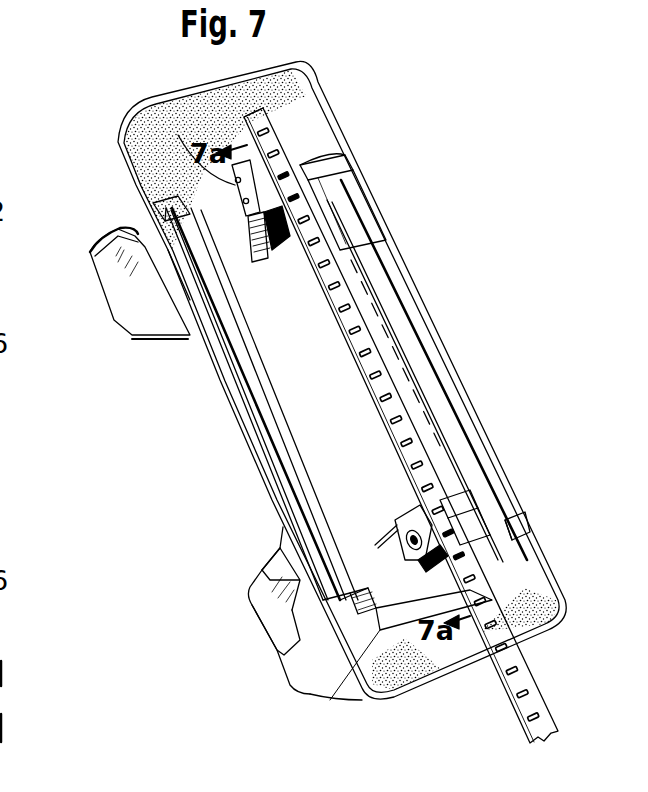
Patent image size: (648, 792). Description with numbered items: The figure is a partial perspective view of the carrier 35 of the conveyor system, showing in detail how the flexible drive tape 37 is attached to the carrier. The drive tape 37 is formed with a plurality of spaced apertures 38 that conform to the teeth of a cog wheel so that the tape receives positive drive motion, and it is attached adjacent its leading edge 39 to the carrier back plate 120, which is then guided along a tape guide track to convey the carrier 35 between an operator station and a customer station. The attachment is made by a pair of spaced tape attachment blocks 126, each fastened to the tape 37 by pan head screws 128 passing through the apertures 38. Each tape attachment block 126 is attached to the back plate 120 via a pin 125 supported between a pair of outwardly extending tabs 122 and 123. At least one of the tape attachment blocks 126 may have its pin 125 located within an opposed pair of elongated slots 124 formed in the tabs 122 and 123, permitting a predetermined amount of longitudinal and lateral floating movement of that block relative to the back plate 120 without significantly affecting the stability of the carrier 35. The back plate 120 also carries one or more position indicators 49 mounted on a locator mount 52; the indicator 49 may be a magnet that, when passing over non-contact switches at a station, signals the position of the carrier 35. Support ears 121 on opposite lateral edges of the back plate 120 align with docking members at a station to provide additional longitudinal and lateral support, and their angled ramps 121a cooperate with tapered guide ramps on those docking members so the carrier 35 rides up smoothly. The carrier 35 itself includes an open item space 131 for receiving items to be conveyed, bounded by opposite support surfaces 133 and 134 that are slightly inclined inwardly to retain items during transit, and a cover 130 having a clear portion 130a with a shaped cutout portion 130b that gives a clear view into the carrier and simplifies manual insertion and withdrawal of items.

The carrier 35 is at (74, 158).
The flexible drive tape 37 is at (530, 708).
The spaced apertures 38 is at (522, 682).
The leading edge 39 is at (252, 117).
The position indicator 49 is at (178, 135).
The locator mount 52 is at (244, 256).
The carrier back plate 120 is at (285, 378).
The support ears 121 is at (276, 421).
The angled ramps 121a is at (150, 183).
The outwardly extending tab 122 is at (322, 190).
The outwardly extending tab 123 is at (372, 696).
The elongated slots 124 is at (412, 545).
The pin 125 is at (407, 550).
The tape attachment block 126 is at (279, 243).
The pan head screws 128 is at (286, 142).
The cover 130 is at (106, 163).
The clear portion 130a is at (268, 575).
The shaped cutout portion 130b is at (174, 340).
The open item space 131 is at (142, 294).
The support surface 133 is at (112, 250).
The support surface 134 is at (284, 622).